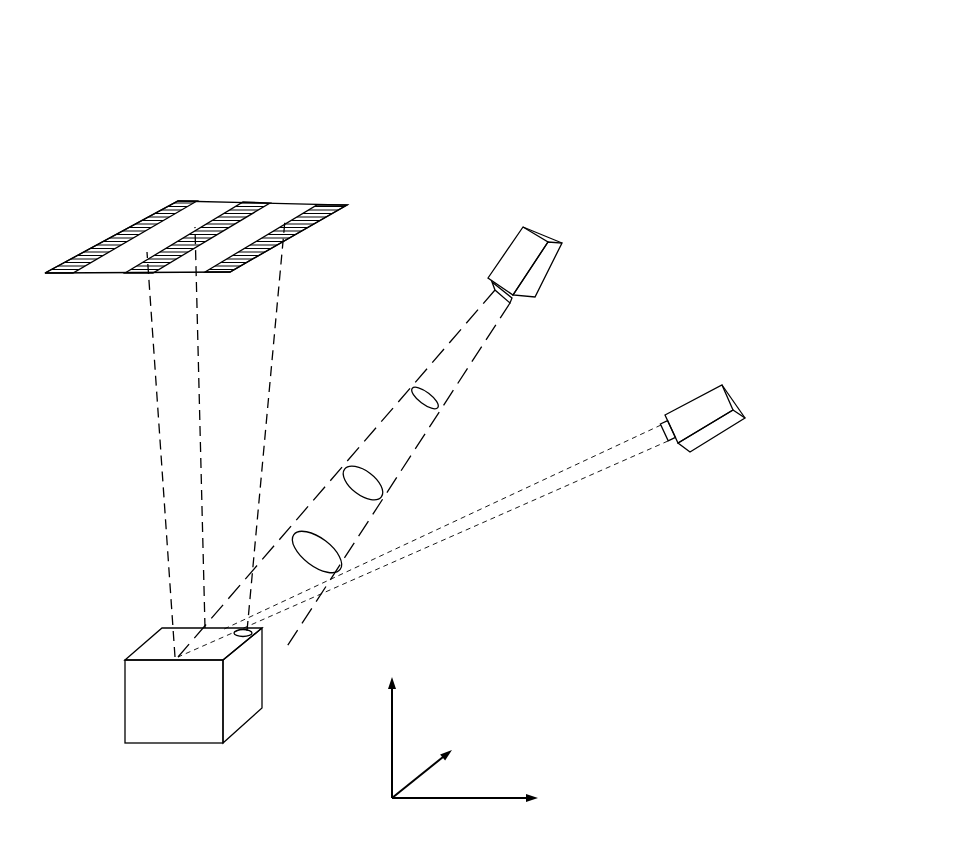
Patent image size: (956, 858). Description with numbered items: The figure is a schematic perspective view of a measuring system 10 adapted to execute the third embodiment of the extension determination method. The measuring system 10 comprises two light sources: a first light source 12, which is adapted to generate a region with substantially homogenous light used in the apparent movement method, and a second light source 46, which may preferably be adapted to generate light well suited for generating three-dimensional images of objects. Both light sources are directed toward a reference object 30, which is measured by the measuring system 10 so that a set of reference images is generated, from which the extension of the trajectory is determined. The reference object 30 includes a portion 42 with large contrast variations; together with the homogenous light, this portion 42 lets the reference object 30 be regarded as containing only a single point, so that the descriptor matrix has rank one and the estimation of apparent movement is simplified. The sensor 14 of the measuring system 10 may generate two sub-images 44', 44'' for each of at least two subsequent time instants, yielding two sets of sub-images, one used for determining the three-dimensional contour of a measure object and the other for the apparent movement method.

The measuring system 10 is at (592, 77).
The sensor 14 is at (116, 210).
The sub-image 44' is at (120, 258).
The sub-image 44'' is at (197, 259).
The first light source 12 is at (512, 260).
The second light source 46 is at (695, 410).
The reference object 30 is at (163, 652).
The portion with large contrast variations 42 is at (248, 627).